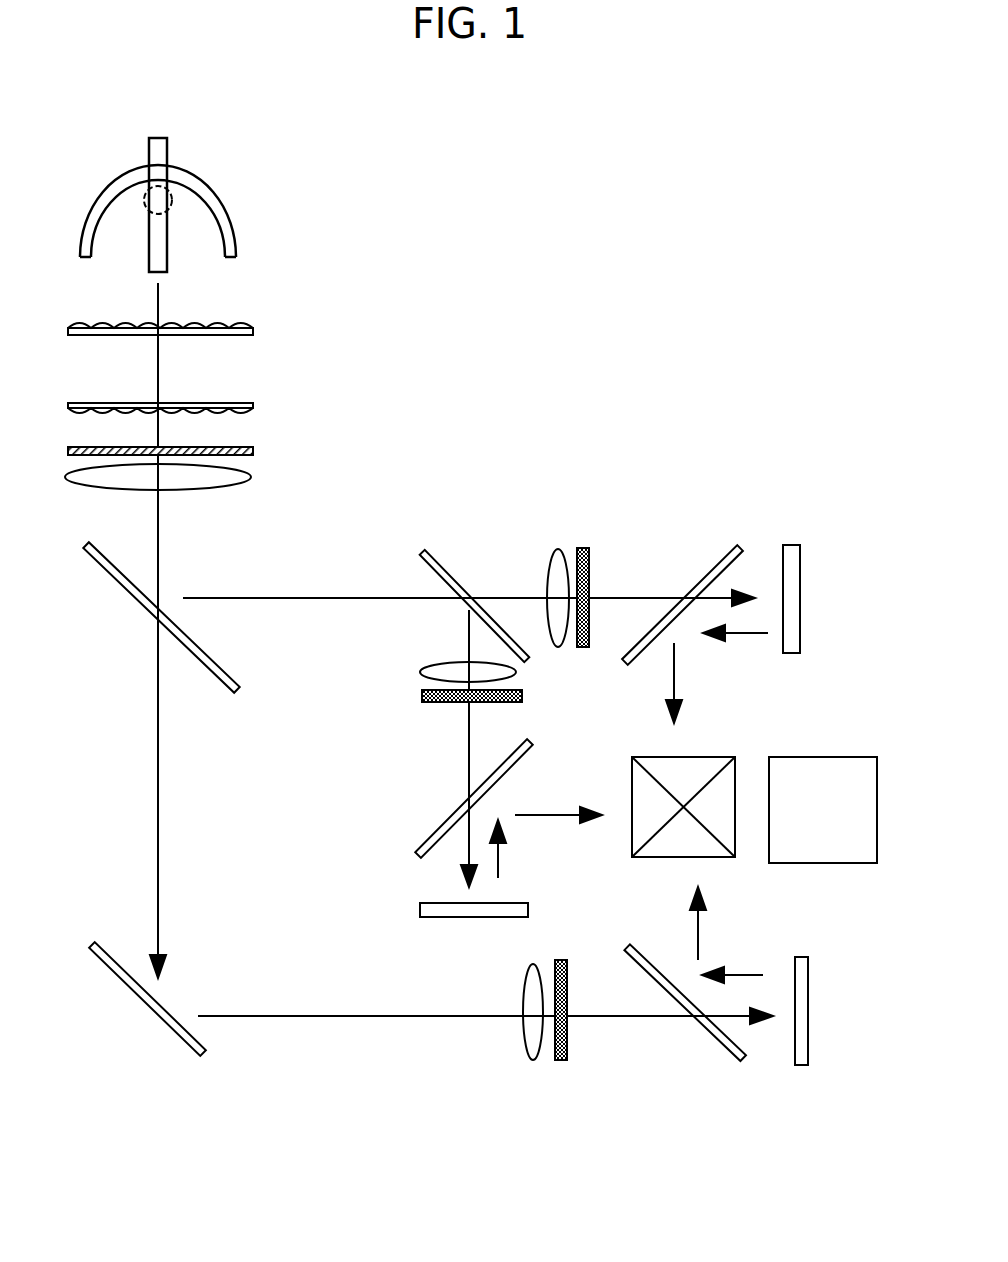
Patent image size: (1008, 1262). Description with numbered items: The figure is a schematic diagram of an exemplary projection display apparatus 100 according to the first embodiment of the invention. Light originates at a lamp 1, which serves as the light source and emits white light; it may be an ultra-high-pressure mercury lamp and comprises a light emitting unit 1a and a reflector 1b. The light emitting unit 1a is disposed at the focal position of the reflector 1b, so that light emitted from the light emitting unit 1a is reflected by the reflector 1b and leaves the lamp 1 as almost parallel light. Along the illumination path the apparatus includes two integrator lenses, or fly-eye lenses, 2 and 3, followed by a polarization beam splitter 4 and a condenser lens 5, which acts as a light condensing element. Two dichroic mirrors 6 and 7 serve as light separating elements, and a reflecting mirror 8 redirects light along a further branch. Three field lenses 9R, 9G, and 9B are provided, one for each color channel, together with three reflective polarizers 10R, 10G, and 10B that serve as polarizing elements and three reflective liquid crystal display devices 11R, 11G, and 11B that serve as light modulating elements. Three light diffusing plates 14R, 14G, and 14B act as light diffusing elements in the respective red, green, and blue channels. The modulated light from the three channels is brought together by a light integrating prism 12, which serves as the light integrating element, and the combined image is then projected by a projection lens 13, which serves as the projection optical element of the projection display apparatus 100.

The projection display apparatus 100 is at (638, 282).
The lamp 1 is at (195, 212).
The light emitting unit 1a is at (170, 214).
The reflector 1b is at (229, 216).
The integrator lens 2 is at (253, 331).
The integrator lens 3 is at (253, 406).
The polarization beam splitter 4 is at (253, 451).
The condenser lens 5 is at (251, 477).
The dichroic mirror 6 is at (112, 572).
The dichroic mirror 7 is at (456, 583).
The reflecting mirror 8 is at (126, 984).
The field lens 9B is at (556, 648).
The field lens 9G is at (424, 672).
The field lens 9R is at (533, 1060).
The reflective polarizer 10B is at (713, 572).
The reflective polarizer 10G is at (445, 831).
The reflective polarizer 10R is at (710, 1032).
The reflective liquid crystal display device 11B is at (793, 545).
The reflective liquid crystal display device 11G is at (420, 910).
The reflective liquid crystal display device 11R is at (808, 1040).
The light integrating prism 12 is at (712, 858).
The projection lens 13 is at (847, 757).
The light diffusing plate 14B is at (585, 548).
The light diffusing plate 14G is at (424, 693).
The light diffusing plate 14R is at (560, 1060).